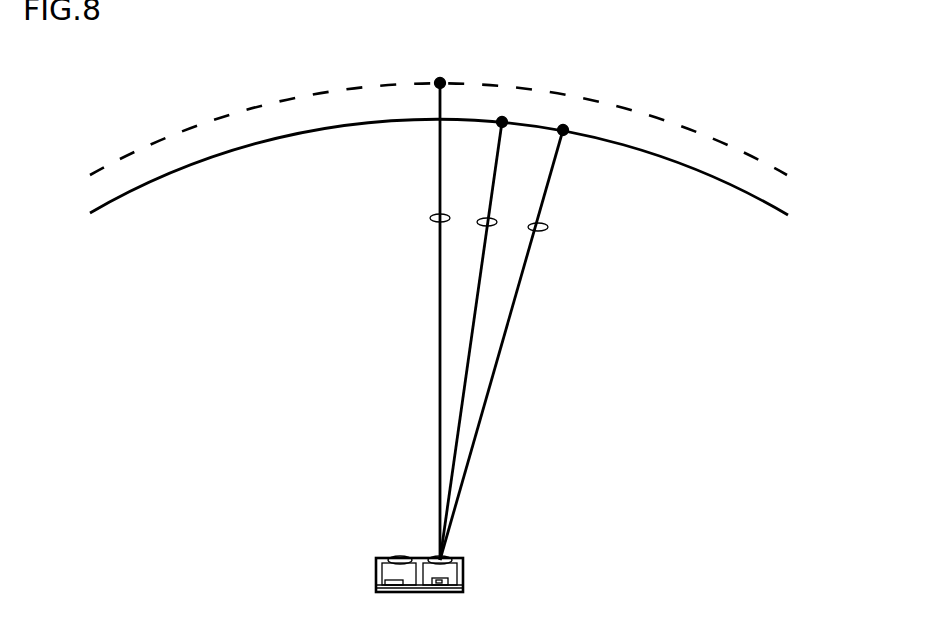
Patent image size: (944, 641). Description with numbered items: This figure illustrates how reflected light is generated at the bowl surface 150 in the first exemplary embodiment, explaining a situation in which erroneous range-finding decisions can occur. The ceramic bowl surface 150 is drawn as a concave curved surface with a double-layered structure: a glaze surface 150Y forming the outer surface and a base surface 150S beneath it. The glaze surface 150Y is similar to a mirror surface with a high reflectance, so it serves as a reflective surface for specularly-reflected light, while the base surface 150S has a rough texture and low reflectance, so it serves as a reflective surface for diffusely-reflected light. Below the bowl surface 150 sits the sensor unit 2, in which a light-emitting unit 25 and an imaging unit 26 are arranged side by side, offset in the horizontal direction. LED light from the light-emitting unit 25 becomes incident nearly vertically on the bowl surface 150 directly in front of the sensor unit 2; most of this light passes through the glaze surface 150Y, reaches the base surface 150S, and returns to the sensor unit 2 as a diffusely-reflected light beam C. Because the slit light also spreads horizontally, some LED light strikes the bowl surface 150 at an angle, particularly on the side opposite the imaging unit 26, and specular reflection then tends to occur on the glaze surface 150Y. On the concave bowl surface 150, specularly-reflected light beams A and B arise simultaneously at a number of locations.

The bowl surface 150 is at (445, 221).
The glaze surface 150Y is at (688, 163).
The base surface 150S is at (745, 148).
The sensor unit 2 is at (404, 533).
The light-emitting unit 25 is at (447, 553).
The imaging unit 26 is at (398, 553).
The specularly-reflected light beam A is at (540, 232).
The specularly-reflected light beam B is at (490, 226).
The diffusely-reflected light beam C is at (433, 217).